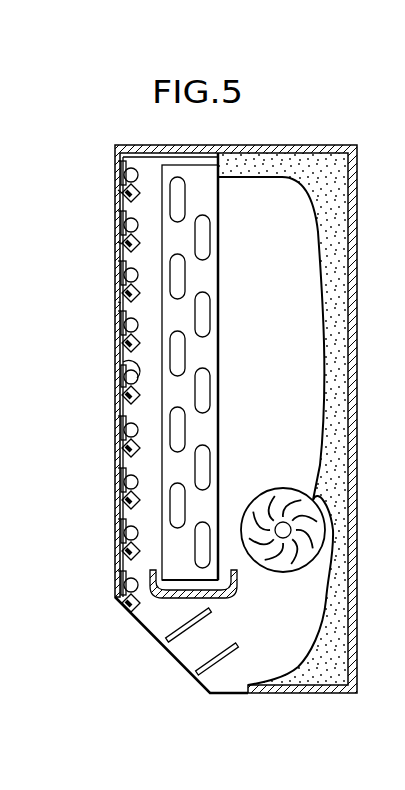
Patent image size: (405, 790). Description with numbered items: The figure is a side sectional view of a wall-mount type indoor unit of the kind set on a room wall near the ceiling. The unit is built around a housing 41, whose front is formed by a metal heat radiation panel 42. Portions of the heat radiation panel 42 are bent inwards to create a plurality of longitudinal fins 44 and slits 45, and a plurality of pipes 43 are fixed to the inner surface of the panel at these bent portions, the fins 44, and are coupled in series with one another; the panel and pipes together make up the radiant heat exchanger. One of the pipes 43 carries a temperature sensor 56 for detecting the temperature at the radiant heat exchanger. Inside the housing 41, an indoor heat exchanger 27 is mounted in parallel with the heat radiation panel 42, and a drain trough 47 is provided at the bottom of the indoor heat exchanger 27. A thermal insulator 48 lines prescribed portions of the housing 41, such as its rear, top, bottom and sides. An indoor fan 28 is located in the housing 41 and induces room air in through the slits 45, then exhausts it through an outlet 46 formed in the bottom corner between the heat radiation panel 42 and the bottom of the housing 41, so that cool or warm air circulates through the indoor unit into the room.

The housing 41 is at (357, 422).
The thermal insulator 48 is at (325, 274).
The indoor heat exchanger 27 is at (219, 356).
The drain trough 47 is at (237, 585).
The indoor fan 28 is at (270, 497).
The outlet 46 is at (193, 650).
The pipes 43 is at (136, 170).
The heat radiation panel 42 is at (125, 275).
The longitudinal fins 44 is at (123, 191).
The temperature sensor 56 is at (124, 364).
The slits 45 is at (122, 405).